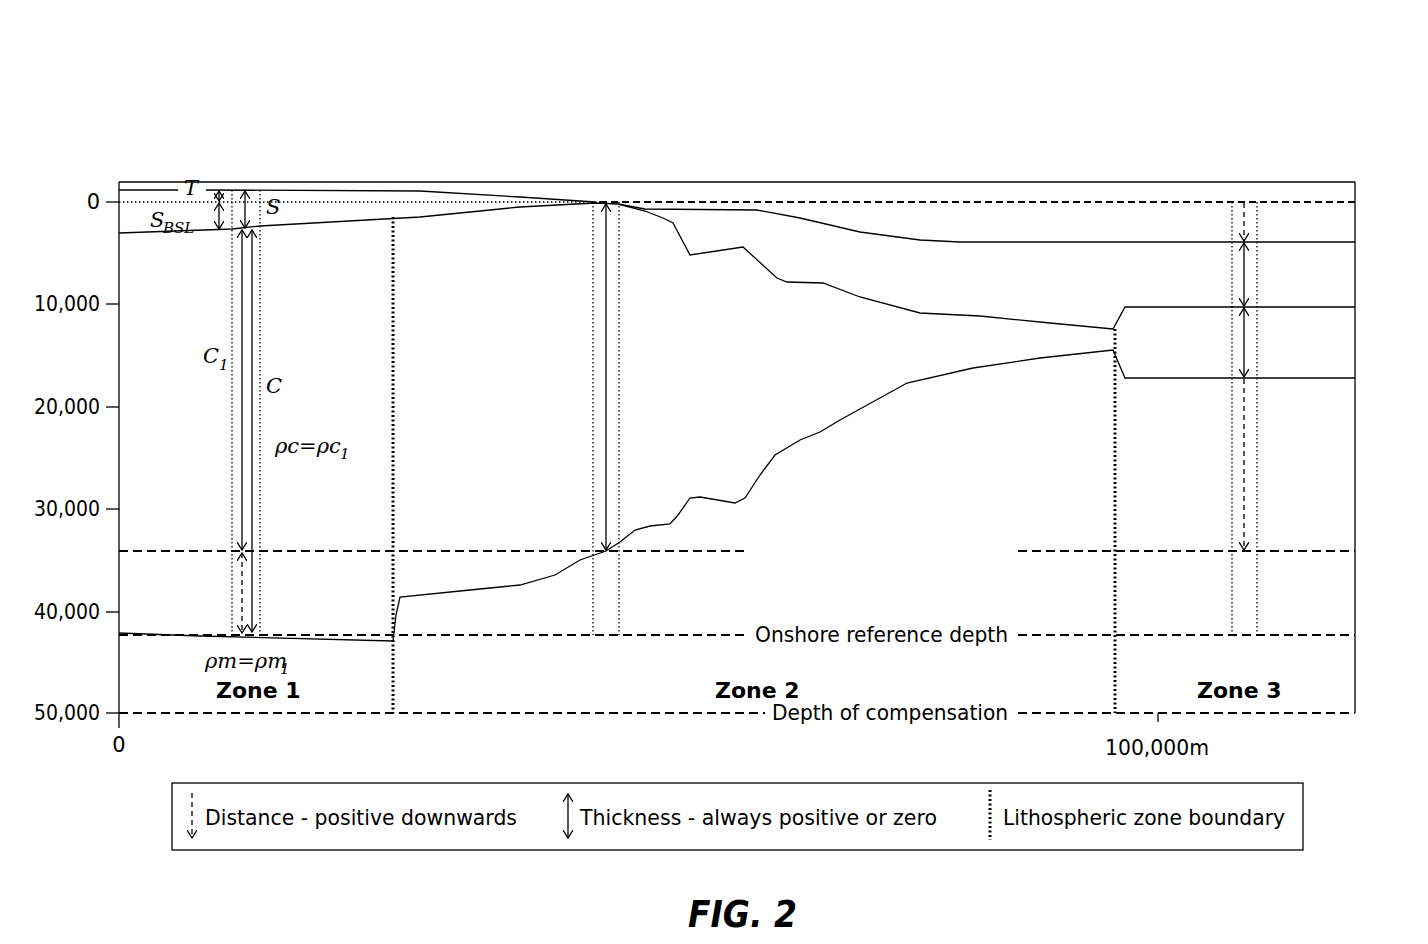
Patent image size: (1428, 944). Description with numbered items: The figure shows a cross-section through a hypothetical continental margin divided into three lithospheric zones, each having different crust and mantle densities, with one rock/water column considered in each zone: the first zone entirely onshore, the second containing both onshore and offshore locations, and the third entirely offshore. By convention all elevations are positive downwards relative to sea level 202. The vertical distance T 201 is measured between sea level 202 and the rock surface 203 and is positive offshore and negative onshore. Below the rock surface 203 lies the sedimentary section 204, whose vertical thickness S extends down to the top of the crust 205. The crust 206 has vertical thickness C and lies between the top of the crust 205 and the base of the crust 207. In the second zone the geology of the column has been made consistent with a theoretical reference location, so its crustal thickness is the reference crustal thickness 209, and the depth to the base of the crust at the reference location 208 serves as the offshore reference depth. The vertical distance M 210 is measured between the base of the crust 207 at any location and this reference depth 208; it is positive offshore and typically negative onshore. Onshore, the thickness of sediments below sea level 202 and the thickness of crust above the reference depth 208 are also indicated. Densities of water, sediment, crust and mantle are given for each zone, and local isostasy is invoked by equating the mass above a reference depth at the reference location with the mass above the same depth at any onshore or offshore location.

The vertical distance T 201 is at (1179, 222).
The sea level 202 is at (733, 211).
The rock surface 203 is at (764, 229).
The sedimentary section 204 is at (1125, 274).
The top of the crust 205 is at (1013, 266).
The crust 206 is at (1240, 342).
The base of the crust 207 is at (733, 511).
The depth to the base of the crust at the reference location 208 is at (765, 552).
The reference crustal thickness Cref 209 is at (731, 377).
The vertical distance M 210 is at (768, 532).